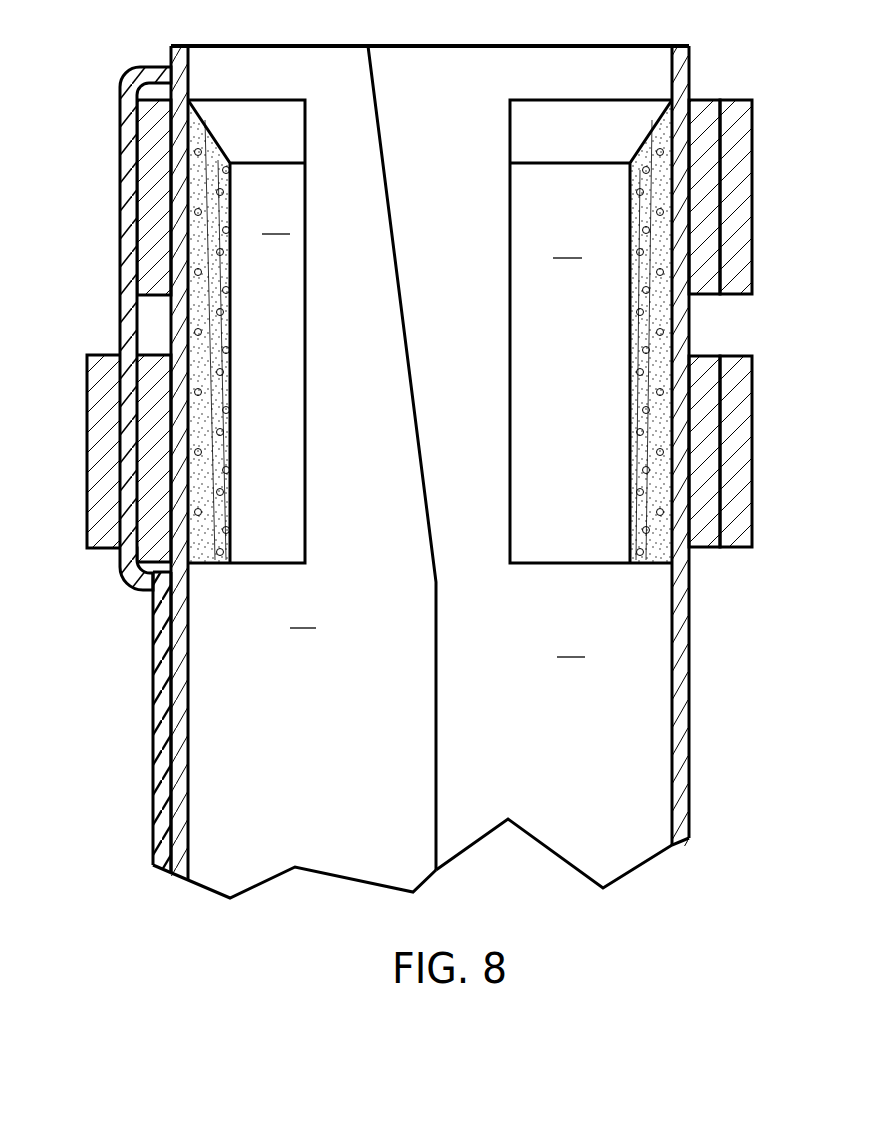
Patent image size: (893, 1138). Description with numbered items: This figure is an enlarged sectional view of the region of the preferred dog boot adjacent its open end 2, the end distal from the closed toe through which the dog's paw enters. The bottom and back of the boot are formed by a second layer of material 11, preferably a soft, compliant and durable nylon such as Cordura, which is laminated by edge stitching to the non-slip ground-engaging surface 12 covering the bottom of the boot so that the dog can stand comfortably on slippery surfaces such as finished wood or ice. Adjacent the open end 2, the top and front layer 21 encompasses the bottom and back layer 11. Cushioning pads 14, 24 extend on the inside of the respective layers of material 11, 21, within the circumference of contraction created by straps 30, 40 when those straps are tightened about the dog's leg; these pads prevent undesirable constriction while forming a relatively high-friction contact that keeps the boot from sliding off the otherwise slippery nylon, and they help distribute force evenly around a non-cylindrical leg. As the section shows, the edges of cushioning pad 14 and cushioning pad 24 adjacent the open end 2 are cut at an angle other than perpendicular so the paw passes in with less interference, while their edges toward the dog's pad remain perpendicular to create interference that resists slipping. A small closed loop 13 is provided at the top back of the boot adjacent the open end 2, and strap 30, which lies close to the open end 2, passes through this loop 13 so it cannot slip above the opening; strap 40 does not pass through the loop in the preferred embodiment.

The open end 2 is at (434, 46).
The second layer of material 11 is at (173, 50).
The non-slip ground-engaging surface 12 is at (160, 690).
The closed loop 13 is at (128, 136).
The cushioning pad 14 is at (215, 302).
The top and front layer 21 is at (680, 725).
The cushioning pad 24 is at (632, 346).
The strap 30 is at (150, 226).
The strap 40 is at (150, 366).